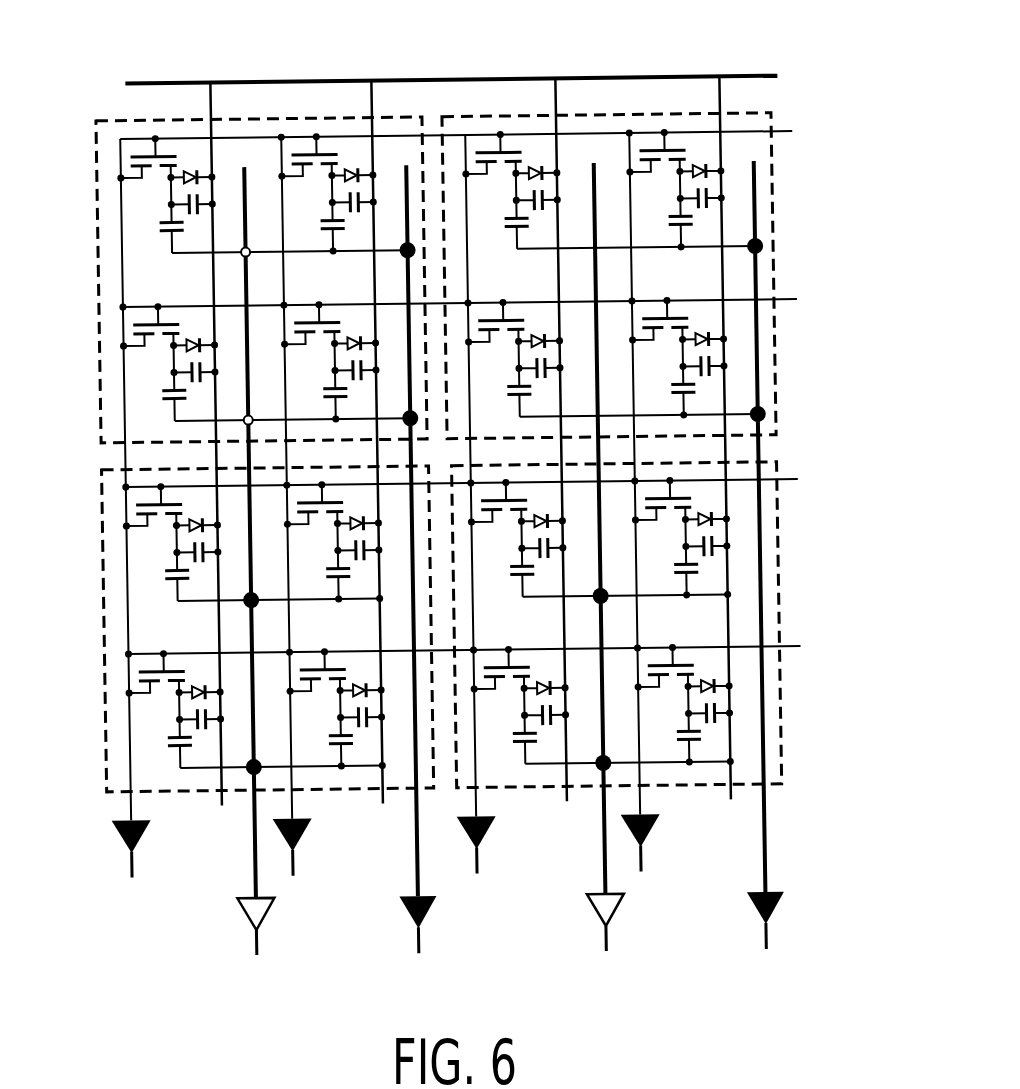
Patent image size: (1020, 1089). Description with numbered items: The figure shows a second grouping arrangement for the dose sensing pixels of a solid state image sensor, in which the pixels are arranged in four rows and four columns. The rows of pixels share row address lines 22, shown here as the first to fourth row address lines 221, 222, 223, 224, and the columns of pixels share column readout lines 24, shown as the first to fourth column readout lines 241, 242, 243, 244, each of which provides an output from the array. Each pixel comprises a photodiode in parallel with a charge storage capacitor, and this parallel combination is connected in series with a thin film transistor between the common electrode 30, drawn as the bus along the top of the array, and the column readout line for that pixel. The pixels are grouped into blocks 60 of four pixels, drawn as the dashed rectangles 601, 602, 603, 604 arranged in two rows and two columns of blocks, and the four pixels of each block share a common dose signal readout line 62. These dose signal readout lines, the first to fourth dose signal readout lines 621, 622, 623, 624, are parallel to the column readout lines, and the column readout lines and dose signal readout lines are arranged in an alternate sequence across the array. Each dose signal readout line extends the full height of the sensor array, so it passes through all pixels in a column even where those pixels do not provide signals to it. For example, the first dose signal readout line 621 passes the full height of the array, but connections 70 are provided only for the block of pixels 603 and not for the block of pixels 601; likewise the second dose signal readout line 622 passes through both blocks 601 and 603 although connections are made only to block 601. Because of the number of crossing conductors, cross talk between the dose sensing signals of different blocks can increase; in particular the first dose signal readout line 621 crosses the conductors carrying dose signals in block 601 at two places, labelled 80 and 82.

The common electrode 30 is at (650, 82).
The row address line 22 is at (503, 386).
The first row address line 221 is at (790, 142).
The second row address line 222 is at (792, 310).
The third row address line 223 is at (790, 490).
The fourth row address line 224 is at (790, 656).
The column readout line 24 is at (417, 505).
The first column readout line 241 is at (124, 805).
The second column readout line 242 is at (284, 804).
The third column readout line 243 is at (467, 804).
The fourth column readout line 244 is at (630, 807).
The block of pixels 60 is at (440, 452).
The first block of pixels 601 is at (94, 224).
The second block of pixels 602 is at (769, 222).
The third block of pixels 603 is at (94, 571).
The fourth block of pixels 604 is at (769, 554).
The dose signal readout line 62 is at (543, 557).
The first dose signal readout line 621 is at (248, 881).
The second dose signal readout line 622 is at (408, 878).
The third dose signal readout line 623 is at (594, 880).
The fourth dose signal readout line 624 is at (755, 881).
The connection 70 is at (241, 606).
The crossing 80 is at (238, 257).
The crossing 82 is at (238, 425).